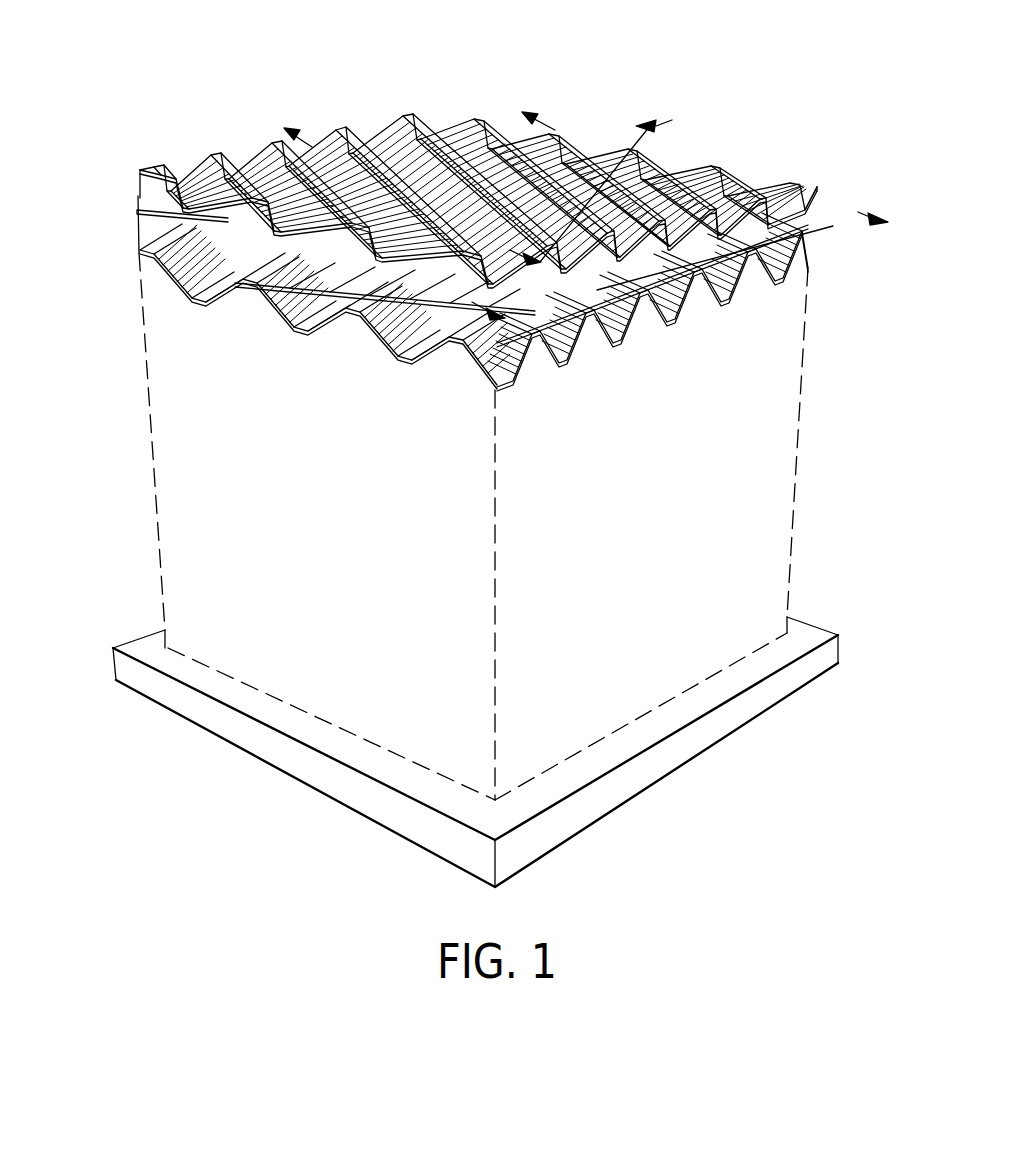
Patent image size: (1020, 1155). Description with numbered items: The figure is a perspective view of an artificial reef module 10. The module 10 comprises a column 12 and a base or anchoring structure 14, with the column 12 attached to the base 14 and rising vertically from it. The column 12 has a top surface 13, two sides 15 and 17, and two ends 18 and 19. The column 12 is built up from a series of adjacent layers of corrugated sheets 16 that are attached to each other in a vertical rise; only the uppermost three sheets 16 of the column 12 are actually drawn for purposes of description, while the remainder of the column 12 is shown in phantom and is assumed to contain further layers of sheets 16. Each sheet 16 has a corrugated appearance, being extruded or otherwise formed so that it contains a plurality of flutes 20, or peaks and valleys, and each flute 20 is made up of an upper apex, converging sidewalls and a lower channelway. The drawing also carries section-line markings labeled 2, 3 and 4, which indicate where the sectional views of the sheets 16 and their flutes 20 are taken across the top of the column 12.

The artificial reef module 10 is at (410, 100).
The column 12 is at (806, 500).
The top surface 13 is at (598, 135).
The base or anchoring structure 14 is at (155, 630).
The side 15 is at (212, 485).
The corrugated sheet 16 is at (812, 180).
The side 17 is at (712, 150).
The end 18 is at (683, 430).
The end 19 is at (137, 324).
The flute 20 is at (258, 142).
The section line 2- 2 is at (670, 254).
The section line 3- 3 is at (415, 114).
The section line 4- 4 is at (583, 183).